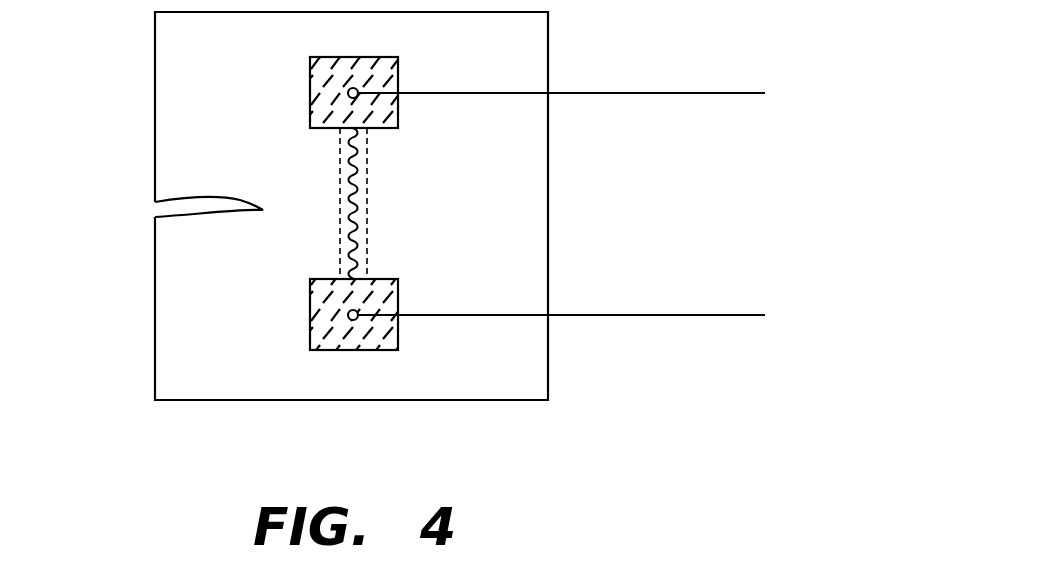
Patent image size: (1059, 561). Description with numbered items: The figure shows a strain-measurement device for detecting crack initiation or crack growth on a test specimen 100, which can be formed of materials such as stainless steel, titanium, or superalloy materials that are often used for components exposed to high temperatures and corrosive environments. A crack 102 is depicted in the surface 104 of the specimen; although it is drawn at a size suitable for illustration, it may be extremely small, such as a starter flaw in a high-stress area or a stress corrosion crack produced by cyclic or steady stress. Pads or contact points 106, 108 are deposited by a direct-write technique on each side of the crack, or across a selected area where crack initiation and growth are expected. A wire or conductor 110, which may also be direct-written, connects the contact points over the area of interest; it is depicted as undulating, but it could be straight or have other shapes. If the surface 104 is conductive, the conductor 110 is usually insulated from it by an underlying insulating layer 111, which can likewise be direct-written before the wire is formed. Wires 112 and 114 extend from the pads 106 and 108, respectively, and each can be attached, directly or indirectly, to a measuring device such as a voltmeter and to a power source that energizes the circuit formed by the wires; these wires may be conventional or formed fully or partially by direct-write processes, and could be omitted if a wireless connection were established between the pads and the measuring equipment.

The test specimen 100 is at (548, 357).
The crack 102 is at (158, 210).
The surface 104 is at (241, 76).
The pad or contact point 106 is at (387, 116).
The pad or contact point 108 is at (387, 342).
The wire/conductor 110 is at (353, 189).
The insulating layer 111 is at (362, 243).
The wire 112 is at (660, 92).
The wire 114 is at (660, 314).